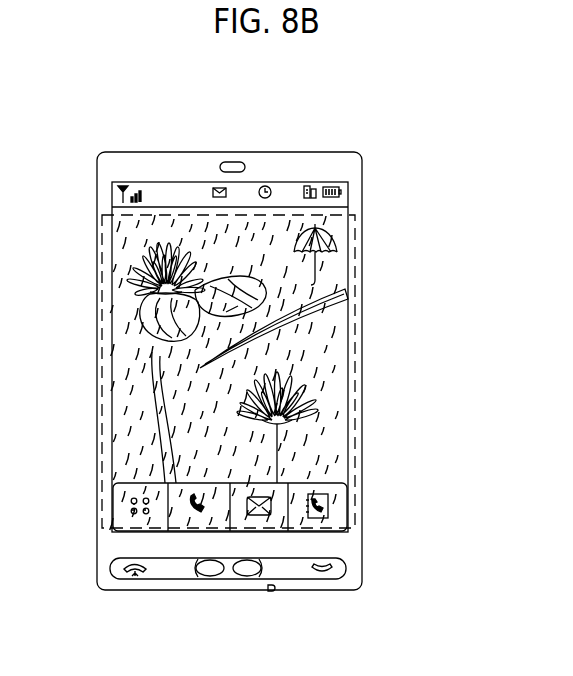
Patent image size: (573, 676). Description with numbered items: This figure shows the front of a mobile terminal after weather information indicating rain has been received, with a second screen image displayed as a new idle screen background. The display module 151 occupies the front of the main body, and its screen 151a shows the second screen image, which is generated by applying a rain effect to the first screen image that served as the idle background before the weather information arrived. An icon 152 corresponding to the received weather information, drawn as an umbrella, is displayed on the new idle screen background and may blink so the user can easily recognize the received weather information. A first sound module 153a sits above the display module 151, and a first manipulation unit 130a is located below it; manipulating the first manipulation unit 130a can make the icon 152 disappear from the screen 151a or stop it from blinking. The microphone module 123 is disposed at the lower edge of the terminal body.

The first sound module 153a is at (237, 162).
The display module 151 is at (374, 253).
The screen 151a is at (355, 336).
The icon 152 is at (330, 230).
The first manipulation unit 130a is at (128, 558).
The microphone module 123 is at (271, 591).